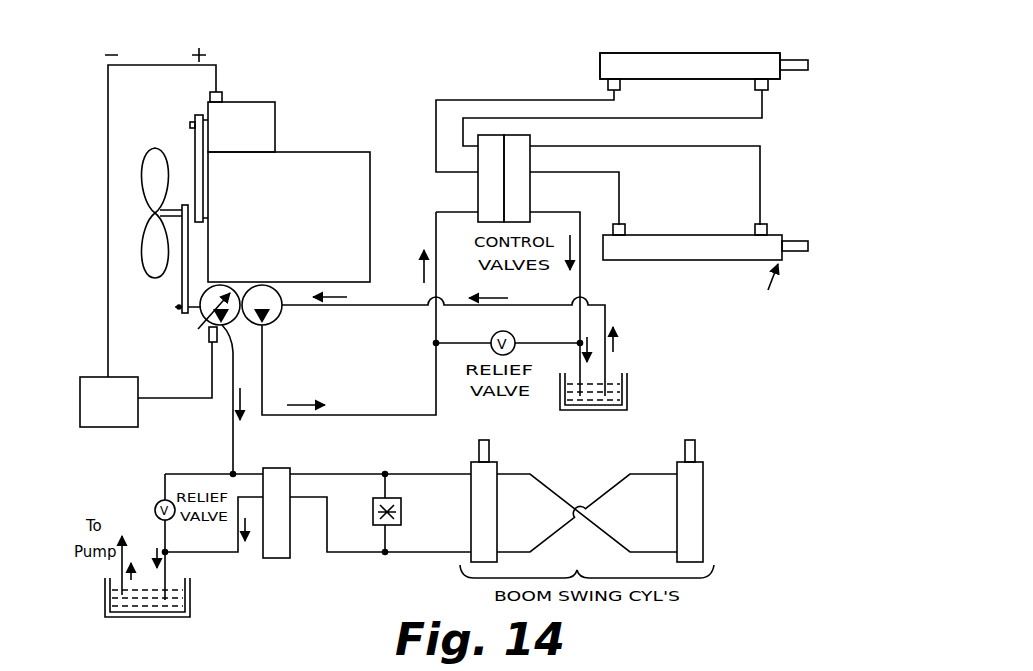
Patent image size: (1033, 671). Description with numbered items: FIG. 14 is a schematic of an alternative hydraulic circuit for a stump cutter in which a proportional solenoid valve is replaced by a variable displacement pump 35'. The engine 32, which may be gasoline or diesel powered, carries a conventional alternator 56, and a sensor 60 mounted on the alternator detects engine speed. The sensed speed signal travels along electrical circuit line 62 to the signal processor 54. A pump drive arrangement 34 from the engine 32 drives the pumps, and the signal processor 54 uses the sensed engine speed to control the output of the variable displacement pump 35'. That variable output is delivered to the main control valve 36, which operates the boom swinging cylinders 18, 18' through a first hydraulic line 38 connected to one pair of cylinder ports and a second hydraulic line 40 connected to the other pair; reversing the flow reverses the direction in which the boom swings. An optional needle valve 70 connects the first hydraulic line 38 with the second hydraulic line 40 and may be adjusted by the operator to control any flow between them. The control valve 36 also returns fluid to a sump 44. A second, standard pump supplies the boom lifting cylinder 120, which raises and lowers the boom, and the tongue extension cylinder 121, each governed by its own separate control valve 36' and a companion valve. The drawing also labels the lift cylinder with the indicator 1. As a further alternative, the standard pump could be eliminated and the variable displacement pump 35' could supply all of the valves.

The electrical circuit line 62 is at (108, 262).
The sensor 60 is at (218, 92).
The alternator 56 is at (272, 118).
The engine 32 is at (338, 152).
The pump drive arrangement 34 is at (182, 290).
The variable displacement pump 35' is at (195, 321).
The signal processor 54 is at (80, 396).
The control valve 36' is at (448, 178).
The boom lifting cylinder 120 is at (722, 79).
The lift cylinder 1 is at (750, 46).
The tongue extension cylinder 121 is at (682, 235).
The sump 44 is at (628, 395).
The main control valve 36 is at (288, 528).
The first hydraulic line 38 is at (357, 474).
The second hydraulic line 40 is at (362, 554).
The needle valve 70 is at (402, 511).
The boom swinging cylinder 18 is at (506, 501).
The boom swinging cylinder 18' is at (722, 501).